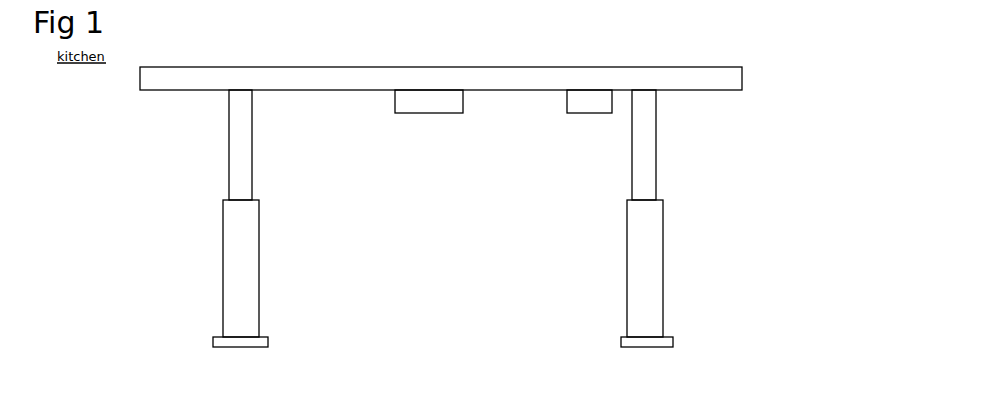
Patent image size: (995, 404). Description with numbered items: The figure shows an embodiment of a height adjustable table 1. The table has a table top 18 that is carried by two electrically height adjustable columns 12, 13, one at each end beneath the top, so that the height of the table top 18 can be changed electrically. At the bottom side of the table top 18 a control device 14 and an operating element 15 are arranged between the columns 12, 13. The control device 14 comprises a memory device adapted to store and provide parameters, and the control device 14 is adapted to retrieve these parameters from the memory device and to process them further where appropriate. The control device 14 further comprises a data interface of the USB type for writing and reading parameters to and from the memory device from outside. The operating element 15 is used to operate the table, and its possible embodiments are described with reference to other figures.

The height adjustable table 1 is at (701, 49).
The table top 18 is at (502, 75).
The electrically height adjustable column 13 is at (291, 218).
The electrically height adjustable column 12 is at (696, 218).
The control device 14 is at (458, 150).
The operating element 15 is at (586, 162).